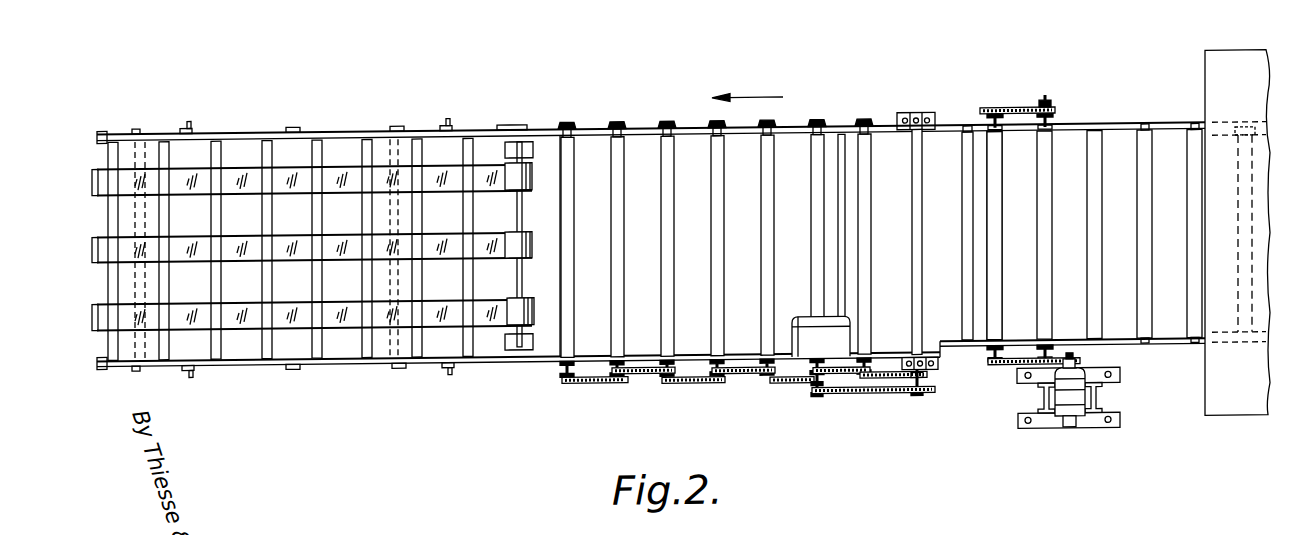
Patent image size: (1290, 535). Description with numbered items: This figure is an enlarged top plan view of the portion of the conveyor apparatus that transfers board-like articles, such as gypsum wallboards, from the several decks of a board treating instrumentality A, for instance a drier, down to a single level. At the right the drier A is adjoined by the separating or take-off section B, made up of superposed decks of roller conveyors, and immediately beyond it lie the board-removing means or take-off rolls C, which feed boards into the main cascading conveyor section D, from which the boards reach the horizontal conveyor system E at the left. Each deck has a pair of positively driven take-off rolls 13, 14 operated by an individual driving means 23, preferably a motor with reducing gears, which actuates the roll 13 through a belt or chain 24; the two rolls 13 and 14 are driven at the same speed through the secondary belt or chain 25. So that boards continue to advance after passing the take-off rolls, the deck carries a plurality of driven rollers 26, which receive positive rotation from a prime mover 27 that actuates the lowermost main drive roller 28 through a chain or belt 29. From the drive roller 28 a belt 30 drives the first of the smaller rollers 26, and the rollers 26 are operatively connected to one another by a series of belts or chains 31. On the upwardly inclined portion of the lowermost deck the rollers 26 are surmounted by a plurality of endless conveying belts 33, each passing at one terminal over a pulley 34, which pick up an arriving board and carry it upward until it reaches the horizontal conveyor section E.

The take-off roll 13 is at (992, 273).
The take-off roll 14 is at (1047, 272).
The driving means 23 is at (1071, 432).
The belt or chain 24 is at (1012, 370).
The secondary belt or chain 25 is at (1020, 113).
The driven roller 26 is at (717, 240).
The prime mover 27 is at (800, 332).
The drive roller 28 is at (933, 374).
The chain or belt 29 is at (822, 396).
The belt 30 is at (888, 397).
The belts or chains 31 is at (600, 384).
The endless conveying belts 33 is at (438, 169).
The pulley 34 is at (527, 185).
The board treating instrumentality A is at (1228, 56).
The separating section B is at (1068, 413).
The take-off rolls C is at (760, 422).
The main cascading conveyor section D is at (348, 404).
The horizontal conveyor system E is at (112, 247).